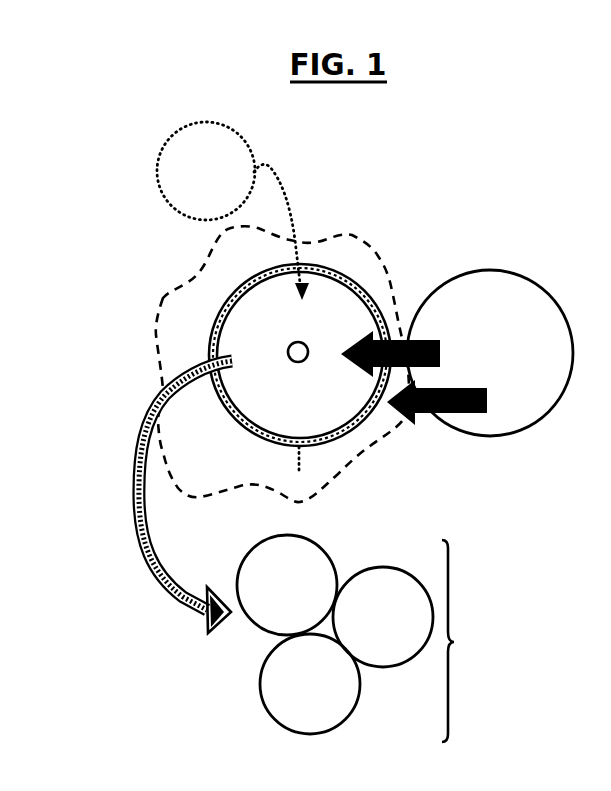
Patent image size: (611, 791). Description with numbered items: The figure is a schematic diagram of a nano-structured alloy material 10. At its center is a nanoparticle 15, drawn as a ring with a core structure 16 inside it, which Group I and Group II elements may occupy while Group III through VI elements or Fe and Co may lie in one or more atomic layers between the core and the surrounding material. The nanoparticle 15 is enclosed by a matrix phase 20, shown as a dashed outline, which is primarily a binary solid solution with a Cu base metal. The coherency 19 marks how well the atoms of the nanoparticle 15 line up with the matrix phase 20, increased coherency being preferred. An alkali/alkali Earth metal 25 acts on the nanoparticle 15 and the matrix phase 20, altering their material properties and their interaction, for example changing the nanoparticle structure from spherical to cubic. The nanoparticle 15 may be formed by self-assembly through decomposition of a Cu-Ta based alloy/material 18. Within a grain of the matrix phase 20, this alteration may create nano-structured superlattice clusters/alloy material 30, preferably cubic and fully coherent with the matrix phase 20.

The nano-structured alloy material 10 is at (466, 641).
The nanoparticle 15 is at (315, 403).
The core structure 16 is at (289, 349).
The Cu-Ta based alloy/material 18 is at (225, 189).
The coherency 19 is at (247, 430).
The matrix phase 20 is at (365, 450).
The alkali/alkali Earth metal 25 is at (505, 370).
The nano-structured superlattice clusters/alloy material 30 is at (271, 599).